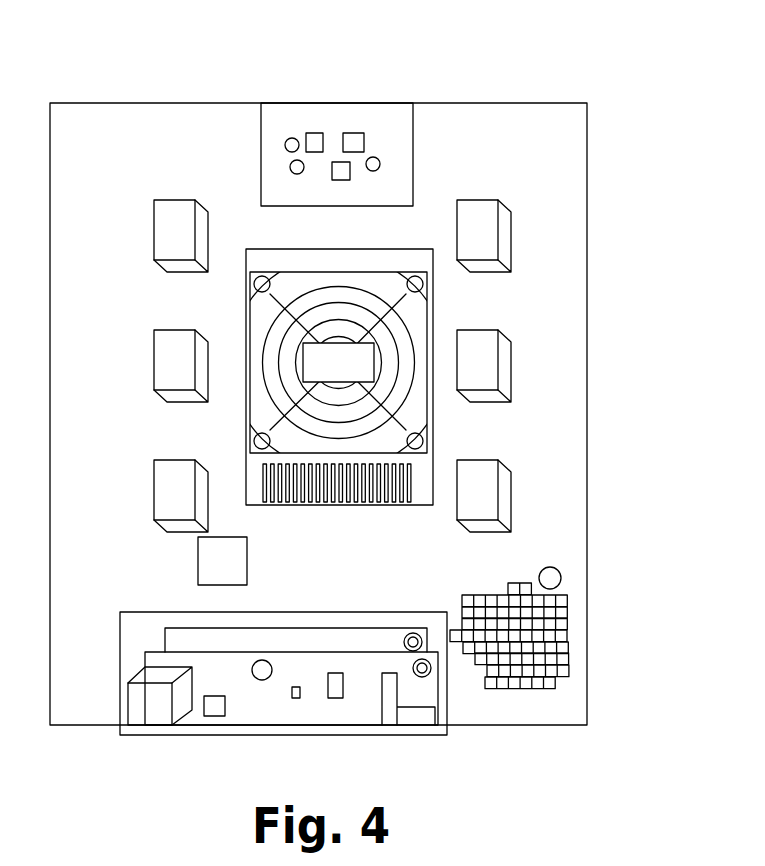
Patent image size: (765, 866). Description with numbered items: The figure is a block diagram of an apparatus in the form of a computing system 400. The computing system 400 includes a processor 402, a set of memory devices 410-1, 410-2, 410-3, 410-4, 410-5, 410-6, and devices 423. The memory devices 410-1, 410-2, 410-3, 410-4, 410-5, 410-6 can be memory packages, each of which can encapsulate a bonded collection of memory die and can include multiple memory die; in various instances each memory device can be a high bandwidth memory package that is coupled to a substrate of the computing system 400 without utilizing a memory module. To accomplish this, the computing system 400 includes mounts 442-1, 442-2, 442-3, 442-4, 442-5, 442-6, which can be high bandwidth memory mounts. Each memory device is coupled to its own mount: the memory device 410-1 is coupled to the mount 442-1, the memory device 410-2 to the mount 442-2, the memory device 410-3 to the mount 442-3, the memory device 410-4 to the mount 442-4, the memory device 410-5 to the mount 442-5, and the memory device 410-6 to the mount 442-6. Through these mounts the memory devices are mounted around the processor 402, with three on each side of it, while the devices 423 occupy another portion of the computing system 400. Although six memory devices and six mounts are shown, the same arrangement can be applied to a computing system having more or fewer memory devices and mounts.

The computing system 400 is at (396, 58).
The processor 402 is at (339, 377).
The memory device 410-1 is at (182, 200).
The memory device 410-2 is at (182, 330).
The memory device 410-3 is at (182, 460).
The memory device 410-4 is at (485, 200).
The memory device 410-5 is at (485, 330).
The memory device 410-6 is at (485, 460).
The mount 442-1 is at (208, 225).
The mount 442-2 is at (208, 373).
The mount 442-3 is at (208, 500).
The mount 442-4 is at (511, 232).
The mount 442-5 is at (511, 362).
The mount 442-6 is at (511, 492).
The devices 423 is at (281, 717).